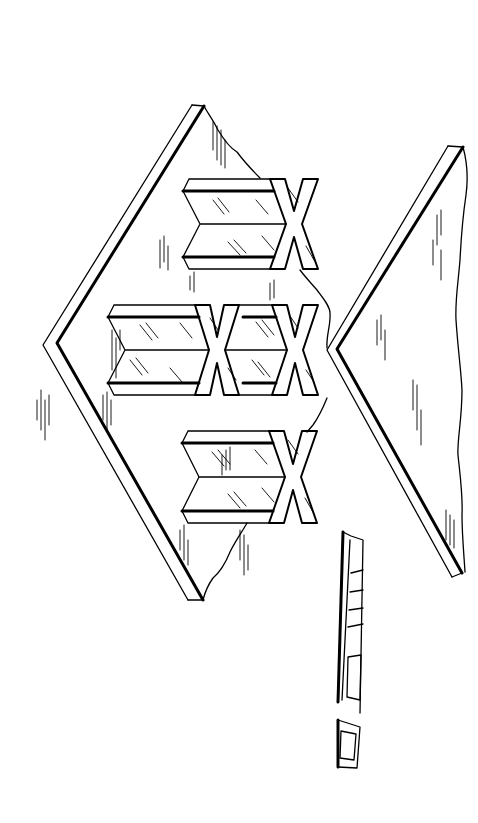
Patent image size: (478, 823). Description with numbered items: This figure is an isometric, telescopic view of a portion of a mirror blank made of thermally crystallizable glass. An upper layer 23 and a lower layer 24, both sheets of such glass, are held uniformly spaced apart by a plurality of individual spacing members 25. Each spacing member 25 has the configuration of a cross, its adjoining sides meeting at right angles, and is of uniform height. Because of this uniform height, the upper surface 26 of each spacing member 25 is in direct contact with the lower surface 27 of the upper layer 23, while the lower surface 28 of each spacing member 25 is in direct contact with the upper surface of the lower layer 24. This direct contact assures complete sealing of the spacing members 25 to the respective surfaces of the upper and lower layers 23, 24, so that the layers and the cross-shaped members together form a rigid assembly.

The upper layer 23 is at (422, 253).
The lower layer 24 is at (188, 150).
The spacing member 25 is at (298, 527).
The upper surface 26 is at (315, 446).
The lower surface 27 is at (435, 533).
The lower surface 28 is at (239, 510).